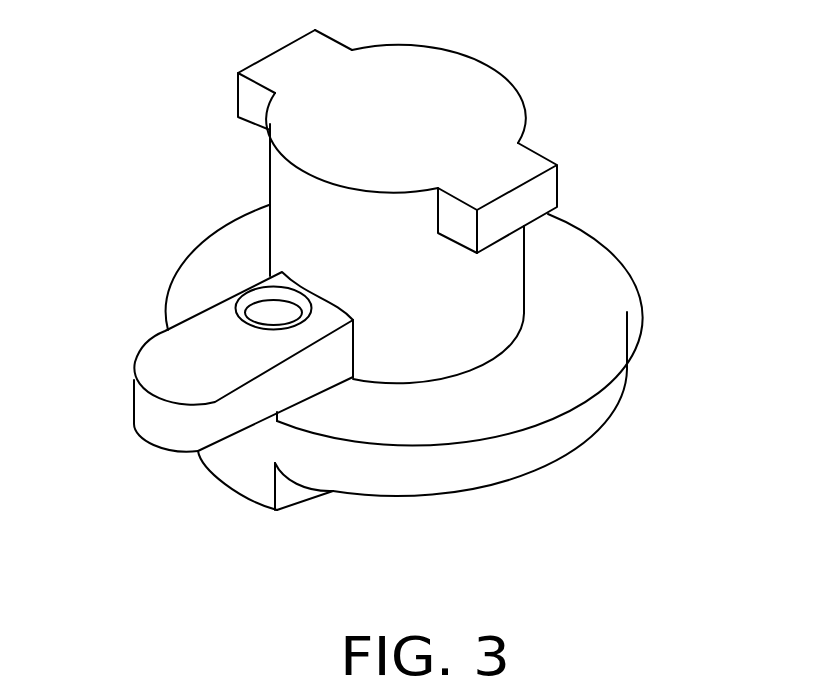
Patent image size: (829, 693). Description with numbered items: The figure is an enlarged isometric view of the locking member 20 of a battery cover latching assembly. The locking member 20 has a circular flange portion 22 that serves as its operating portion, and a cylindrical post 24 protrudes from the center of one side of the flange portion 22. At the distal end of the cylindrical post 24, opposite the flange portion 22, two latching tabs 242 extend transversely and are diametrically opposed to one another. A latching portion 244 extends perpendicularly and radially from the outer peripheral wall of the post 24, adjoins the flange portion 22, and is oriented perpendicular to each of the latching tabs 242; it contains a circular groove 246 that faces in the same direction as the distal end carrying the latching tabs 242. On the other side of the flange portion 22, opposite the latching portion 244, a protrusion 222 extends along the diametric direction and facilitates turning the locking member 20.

The locking member 20 is at (607, 210).
The circular flange portion 22 is at (573, 413).
The protrusion 222 is at (292, 495).
The cylindrical post 24 is at (473, 287).
The latching tabs 242 is at (252, 93).
The latching portion 244 is at (165, 380).
The circular groove 246 is at (273, 313).